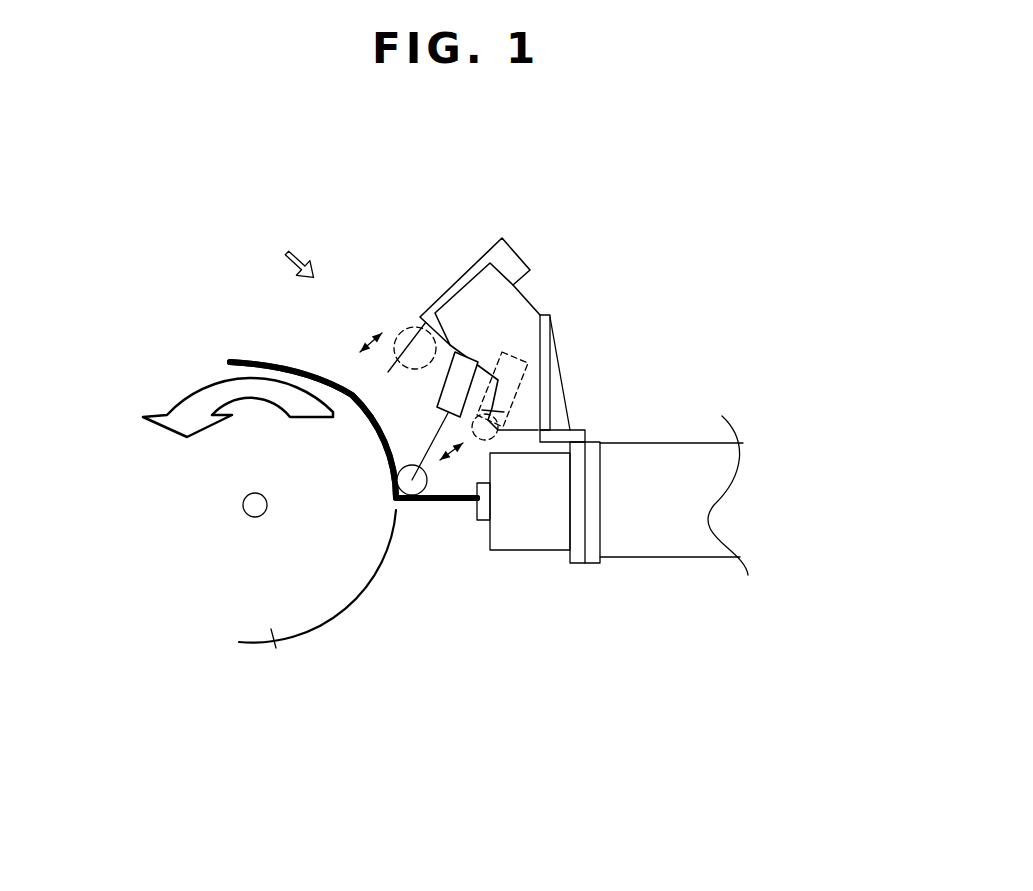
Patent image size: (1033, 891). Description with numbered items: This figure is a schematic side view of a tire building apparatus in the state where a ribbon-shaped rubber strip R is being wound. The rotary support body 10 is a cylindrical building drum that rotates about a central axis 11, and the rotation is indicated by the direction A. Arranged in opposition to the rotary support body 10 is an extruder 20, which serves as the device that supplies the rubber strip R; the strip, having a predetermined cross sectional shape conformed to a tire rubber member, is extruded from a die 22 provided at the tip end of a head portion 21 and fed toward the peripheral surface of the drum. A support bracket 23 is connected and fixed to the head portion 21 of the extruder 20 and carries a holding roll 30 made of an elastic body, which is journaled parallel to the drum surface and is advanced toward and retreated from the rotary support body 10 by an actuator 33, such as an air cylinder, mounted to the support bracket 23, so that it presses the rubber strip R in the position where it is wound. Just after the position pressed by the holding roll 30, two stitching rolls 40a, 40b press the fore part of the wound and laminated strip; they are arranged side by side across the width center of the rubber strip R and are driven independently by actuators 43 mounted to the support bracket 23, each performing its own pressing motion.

The rotary support body 10 is at (276, 630).
The central axis 11 is at (250, 515).
The extruder 20 is at (682, 467).
The head portion 21 is at (538, 537).
The die 22 is at (476, 522).
The support bracket 23 is at (515, 322).
The holding roll 30 is at (397, 490).
The actuator 33 is at (462, 385).
The stitching roll 40a is at (310, 397).
The stitching roll 40b is at (346, 368).
The actuator 43 is at (460, 282).
The direction A is at (284, 248).
The rubber strip R is at (435, 503).